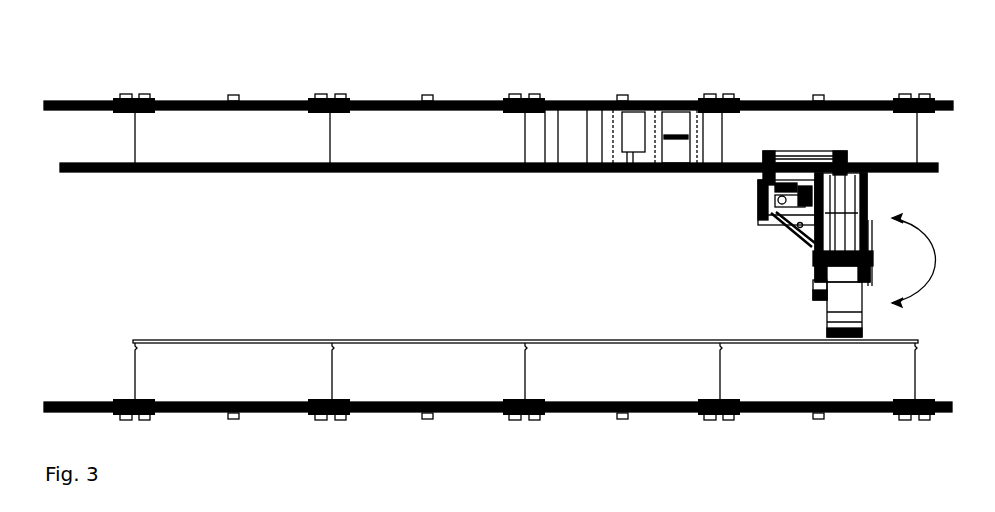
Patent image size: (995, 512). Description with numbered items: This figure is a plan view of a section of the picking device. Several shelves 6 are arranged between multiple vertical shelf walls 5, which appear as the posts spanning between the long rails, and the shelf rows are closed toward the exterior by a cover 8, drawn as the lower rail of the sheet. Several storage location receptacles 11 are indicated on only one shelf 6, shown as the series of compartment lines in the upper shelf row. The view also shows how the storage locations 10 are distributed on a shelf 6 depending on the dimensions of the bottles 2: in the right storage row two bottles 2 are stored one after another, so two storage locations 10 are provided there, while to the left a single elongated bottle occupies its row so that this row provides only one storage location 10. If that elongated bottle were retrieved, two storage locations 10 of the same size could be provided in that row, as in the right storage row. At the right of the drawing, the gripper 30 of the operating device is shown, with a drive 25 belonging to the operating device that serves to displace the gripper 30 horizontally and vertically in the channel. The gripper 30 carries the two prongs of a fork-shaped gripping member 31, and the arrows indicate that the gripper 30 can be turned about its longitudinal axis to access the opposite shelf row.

The bottle 2 is at (678, 122).
The vertical shelf wall 5 is at (331, 140).
The shelf 6 is at (425, 140).
The cover 8 is at (605, 415).
The storage location 10 is at (660, 112).
The storage location receptacle 11 is at (562, 135).
The drive 25 is at (770, 160).
The gripper 30 is at (830, 184).
The gripping member 31 is at (775, 220).